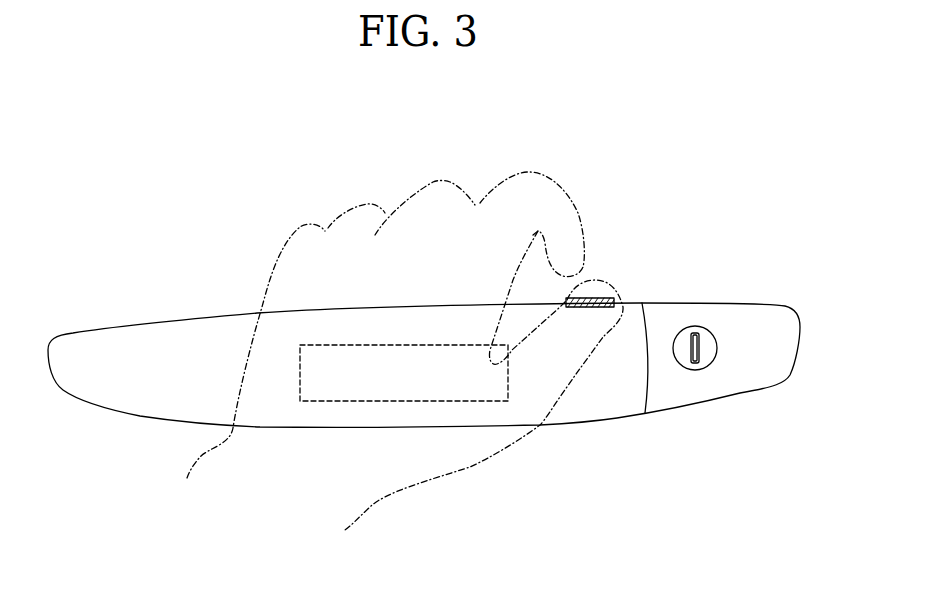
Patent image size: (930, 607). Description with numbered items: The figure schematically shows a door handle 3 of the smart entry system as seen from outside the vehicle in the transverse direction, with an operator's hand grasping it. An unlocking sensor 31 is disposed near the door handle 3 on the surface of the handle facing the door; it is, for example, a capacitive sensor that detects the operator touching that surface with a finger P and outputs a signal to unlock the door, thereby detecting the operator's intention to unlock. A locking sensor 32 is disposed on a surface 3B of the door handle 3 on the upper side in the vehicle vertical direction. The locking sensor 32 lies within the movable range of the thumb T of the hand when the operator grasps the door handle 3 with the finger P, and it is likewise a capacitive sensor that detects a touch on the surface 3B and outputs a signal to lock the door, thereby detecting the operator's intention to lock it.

The door handle 3 is at (162, 335).
The unlocking sensor 31 is at (342, 343).
The locking sensor 32 is at (600, 299).
The surface 3B is at (532, 305).
The finger P is at (437, 185).
The thumb T is at (595, 281).